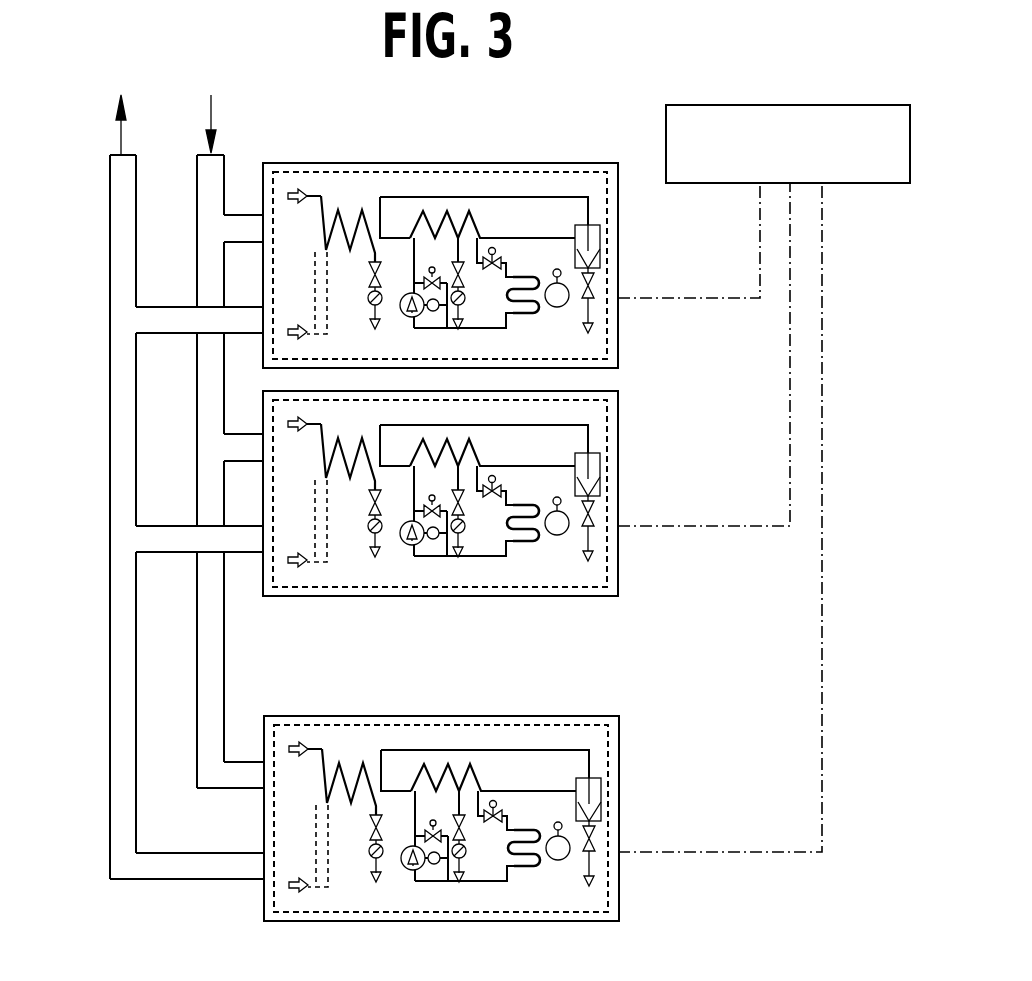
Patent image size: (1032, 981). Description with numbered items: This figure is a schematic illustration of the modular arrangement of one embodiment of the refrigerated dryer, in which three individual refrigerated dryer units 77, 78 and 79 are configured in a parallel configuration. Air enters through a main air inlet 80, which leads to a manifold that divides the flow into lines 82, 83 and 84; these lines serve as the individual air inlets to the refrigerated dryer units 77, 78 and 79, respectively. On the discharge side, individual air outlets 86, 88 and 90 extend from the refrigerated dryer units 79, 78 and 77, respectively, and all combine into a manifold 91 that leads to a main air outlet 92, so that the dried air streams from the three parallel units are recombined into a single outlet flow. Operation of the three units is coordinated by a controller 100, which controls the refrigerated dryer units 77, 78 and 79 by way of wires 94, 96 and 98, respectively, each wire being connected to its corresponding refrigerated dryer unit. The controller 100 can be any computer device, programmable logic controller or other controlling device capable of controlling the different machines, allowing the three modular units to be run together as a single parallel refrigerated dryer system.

The refrigerated dryer unit 77 is at (533, 163).
The refrigerated dryer unit 78 is at (540, 597).
The refrigerated dryer unit 79 is at (445, 716).
The main air inlet 80 is at (222, 110).
The line 82 is at (235, 214).
The line 83 is at (242, 452).
The line 84 is at (242, 763).
The individual air outlet 86 is at (192, 864).
The individual air outlet 88 is at (173, 540).
The individual air outlet 90 is at (172, 318).
The manifold 91 is at (117, 537).
The main air outlet 92 is at (117, 127).
The wire 94 is at (688, 298).
The wire 96 is at (703, 526).
The wire 98 is at (703, 851).
The controller 100 is at (766, 161).